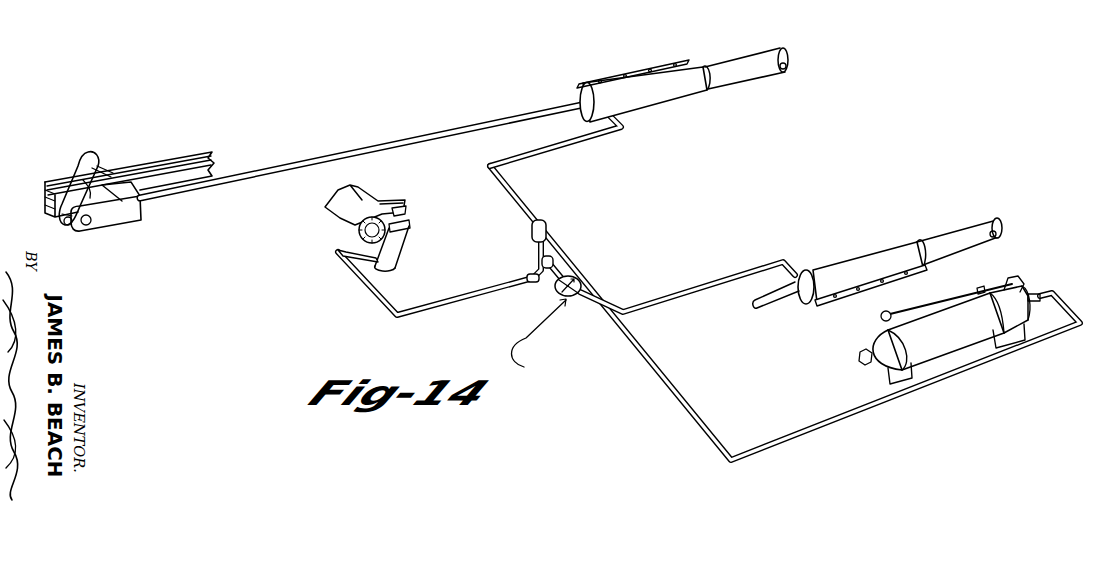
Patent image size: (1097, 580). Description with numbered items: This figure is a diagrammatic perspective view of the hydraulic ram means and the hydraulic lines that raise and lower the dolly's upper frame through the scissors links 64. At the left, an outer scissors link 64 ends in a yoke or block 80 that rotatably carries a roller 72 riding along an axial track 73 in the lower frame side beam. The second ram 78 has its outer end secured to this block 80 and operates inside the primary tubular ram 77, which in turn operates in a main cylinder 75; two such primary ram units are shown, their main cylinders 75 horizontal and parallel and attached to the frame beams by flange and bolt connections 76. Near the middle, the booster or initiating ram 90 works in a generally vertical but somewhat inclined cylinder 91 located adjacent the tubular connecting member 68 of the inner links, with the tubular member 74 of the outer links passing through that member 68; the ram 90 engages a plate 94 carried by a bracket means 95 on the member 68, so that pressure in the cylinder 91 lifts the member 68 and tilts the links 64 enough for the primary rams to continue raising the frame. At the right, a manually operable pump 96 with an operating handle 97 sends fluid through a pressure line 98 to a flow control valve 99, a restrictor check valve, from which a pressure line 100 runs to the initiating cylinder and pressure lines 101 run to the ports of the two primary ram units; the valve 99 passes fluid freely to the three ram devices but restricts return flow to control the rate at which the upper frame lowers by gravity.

The scissors links 64 is at (97, 178).
The tubular horizontal connecting member 68 is at (358, 205).
The rollers 72 is at (63, 218).
The tracks 73 is at (43, 200).
The tubular member 74 is at (329, 253).
The main cylinder 75 is at (642, 90).
The flange and bolt connections 76 is at (675, 68).
The primary tubular ram 77 is at (752, 60).
The second ram 78 is at (412, 140).
The yoke or block 80 is at (123, 210).
The initiating ram 90 is at (409, 226).
The cylinder 91 is at (402, 251).
The plate 94 is at (406, 212).
The bracket means 95 is at (398, 203).
The manually operable pump 96 is at (955, 345).
The operating lever or handle 97 is at (932, 303).
The pressure line 98 is at (838, 418).
The flow control valve 99 is at (577, 283).
The pressure line 100 is at (445, 304).
The pressure lines 101 is at (552, 148).